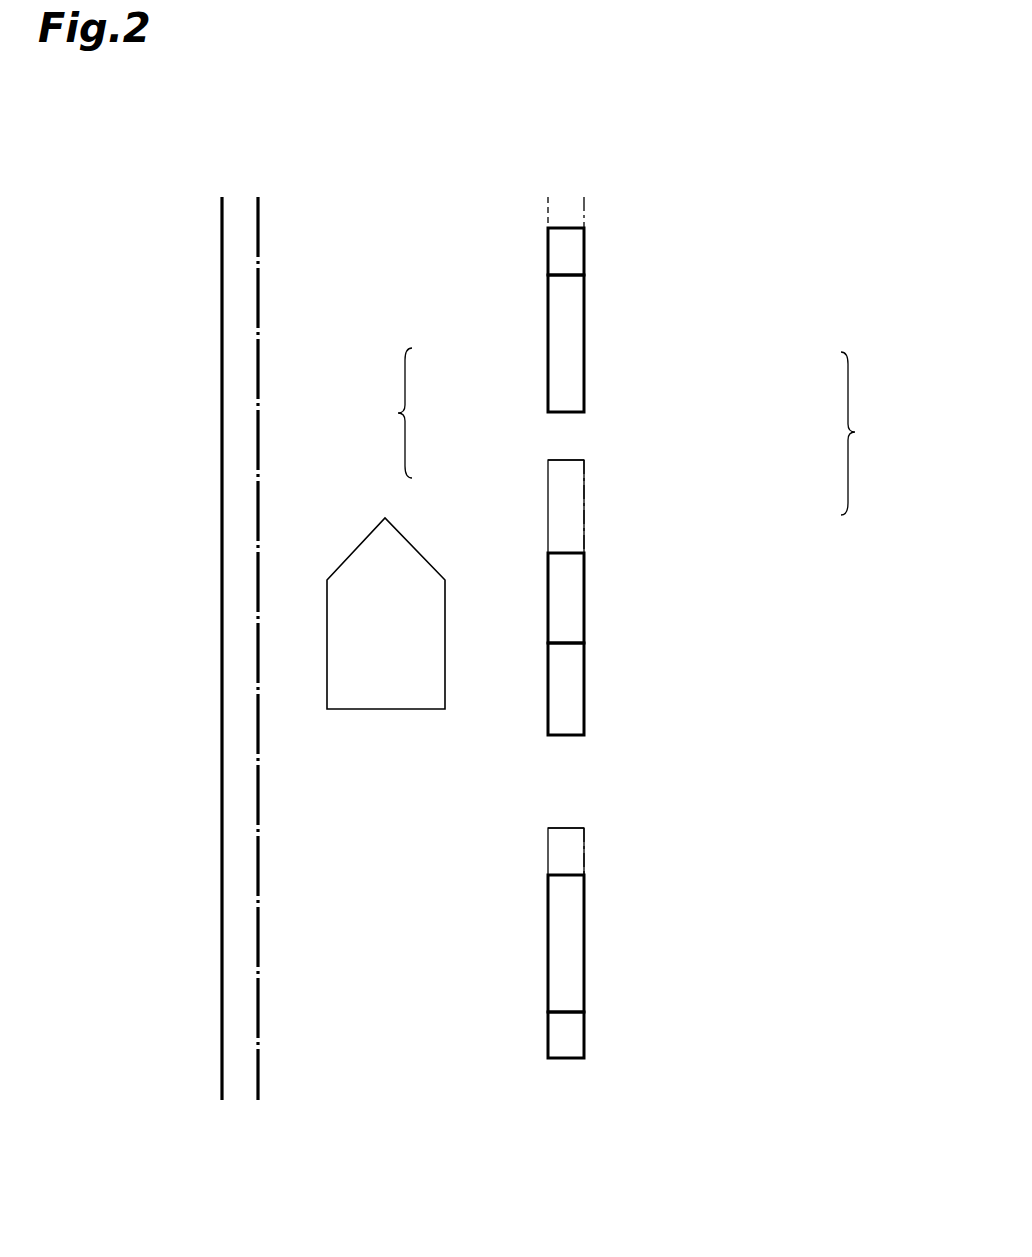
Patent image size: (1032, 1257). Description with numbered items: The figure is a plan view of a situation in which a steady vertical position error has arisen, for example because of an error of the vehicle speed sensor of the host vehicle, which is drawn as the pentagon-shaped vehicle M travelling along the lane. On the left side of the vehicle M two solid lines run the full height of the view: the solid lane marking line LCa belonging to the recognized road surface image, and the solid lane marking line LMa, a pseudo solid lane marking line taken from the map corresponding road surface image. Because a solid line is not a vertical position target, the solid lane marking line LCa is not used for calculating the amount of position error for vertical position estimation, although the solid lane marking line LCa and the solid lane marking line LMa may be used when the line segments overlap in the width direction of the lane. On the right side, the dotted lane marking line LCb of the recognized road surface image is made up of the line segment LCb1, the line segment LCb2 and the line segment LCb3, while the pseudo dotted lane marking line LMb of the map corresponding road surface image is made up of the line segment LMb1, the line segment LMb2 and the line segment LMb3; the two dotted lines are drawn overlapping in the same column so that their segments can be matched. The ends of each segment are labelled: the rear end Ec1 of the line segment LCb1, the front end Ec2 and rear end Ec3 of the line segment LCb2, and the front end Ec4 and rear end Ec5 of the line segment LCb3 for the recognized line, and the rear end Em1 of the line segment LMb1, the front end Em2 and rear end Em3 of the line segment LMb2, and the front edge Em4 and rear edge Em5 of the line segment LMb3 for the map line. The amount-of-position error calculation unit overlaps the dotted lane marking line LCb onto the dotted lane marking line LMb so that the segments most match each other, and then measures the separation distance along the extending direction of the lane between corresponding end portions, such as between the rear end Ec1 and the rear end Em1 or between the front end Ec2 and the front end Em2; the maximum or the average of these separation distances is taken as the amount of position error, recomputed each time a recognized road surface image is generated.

The solid lane marking line LCa is at (262, 214).
The solid lane marking line LMa is at (258, 266).
The vehicle M is at (352, 554).
The dotted lane marking line LMb is at (378, 413).
The line segment LMb1 is at (548, 378).
The line segment LMb2 is at (548, 678).
The line segment LMb3 is at (548, 1025).
The dotted lane marking line LCb is at (873, 433).
The line segment LCb1 is at (584, 215).
The line segment LCb2 is at (584, 500).
The line segment LCb3 is at (584, 857).
The rear end Ec1 is at (566, 277).
The rear end Em1 is at (568, 412).
The front end Ec2 is at (567, 461).
The front end Em2 is at (566, 553).
The rear end Ec3 is at (566, 645).
The rear end Em3 is at (567, 736).
The front end Ec4 is at (568, 828).
The front edge Em4 is at (567, 876).
The rear end Ec5 is at (567, 1013).
The rear edge Em5 is at (568, 1059).